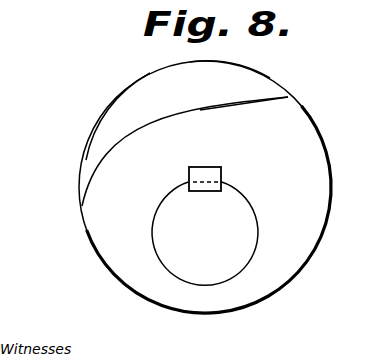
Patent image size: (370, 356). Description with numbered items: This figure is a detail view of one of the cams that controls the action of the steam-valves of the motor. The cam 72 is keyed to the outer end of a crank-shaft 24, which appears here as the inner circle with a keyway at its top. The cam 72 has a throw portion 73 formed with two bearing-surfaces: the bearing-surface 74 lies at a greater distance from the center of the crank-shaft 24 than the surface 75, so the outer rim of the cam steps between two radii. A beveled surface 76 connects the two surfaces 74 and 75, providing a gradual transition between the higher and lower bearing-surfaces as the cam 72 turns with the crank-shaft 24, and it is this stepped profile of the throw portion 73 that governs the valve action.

The cam 72 is at (88, 231).
The throw portion 73 is at (245, 68).
The bearing-surface 74 is at (132, 84).
The bearing-surface 75 is at (179, 112).
The beveled surface 76 is at (114, 146).
The crank-shaft 24 is at (208, 278).